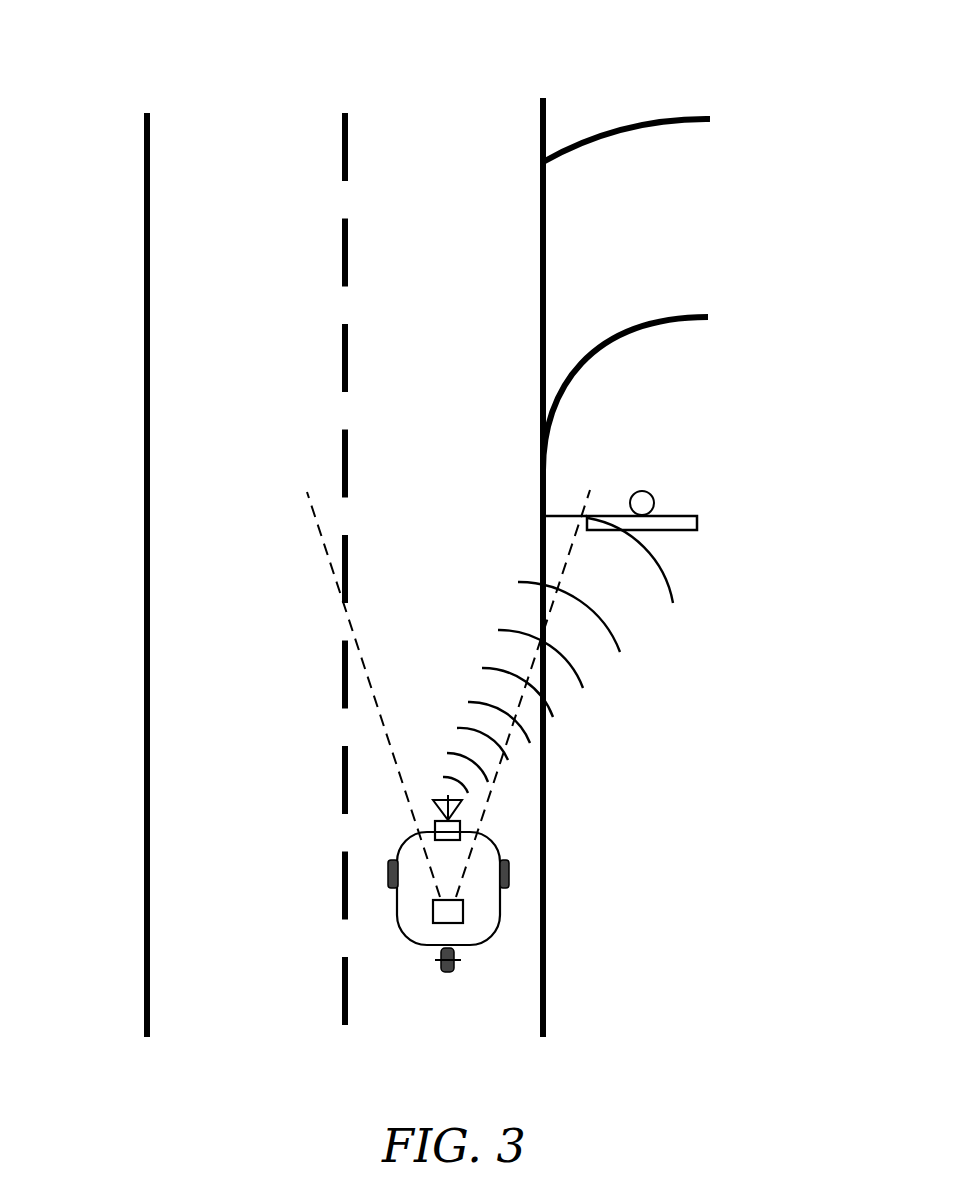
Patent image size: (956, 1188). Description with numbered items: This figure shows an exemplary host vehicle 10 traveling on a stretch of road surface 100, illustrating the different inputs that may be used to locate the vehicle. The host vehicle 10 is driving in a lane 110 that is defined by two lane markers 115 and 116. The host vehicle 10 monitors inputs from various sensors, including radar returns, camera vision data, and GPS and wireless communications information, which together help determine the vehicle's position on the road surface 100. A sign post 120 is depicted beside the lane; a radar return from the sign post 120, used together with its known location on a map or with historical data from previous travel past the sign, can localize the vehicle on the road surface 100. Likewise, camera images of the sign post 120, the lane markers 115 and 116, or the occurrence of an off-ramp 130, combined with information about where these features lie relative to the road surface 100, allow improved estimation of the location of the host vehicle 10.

The road surface 100 is at (253, 220).
The lane 110 is at (478, 188).
The lane marker 115 is at (346, 253).
The lane marker 116 is at (546, 475).
The sign post 120 is at (698, 524).
The off-ramp 130 is at (688, 223).
The host vehicle 10 is at (481, 885).